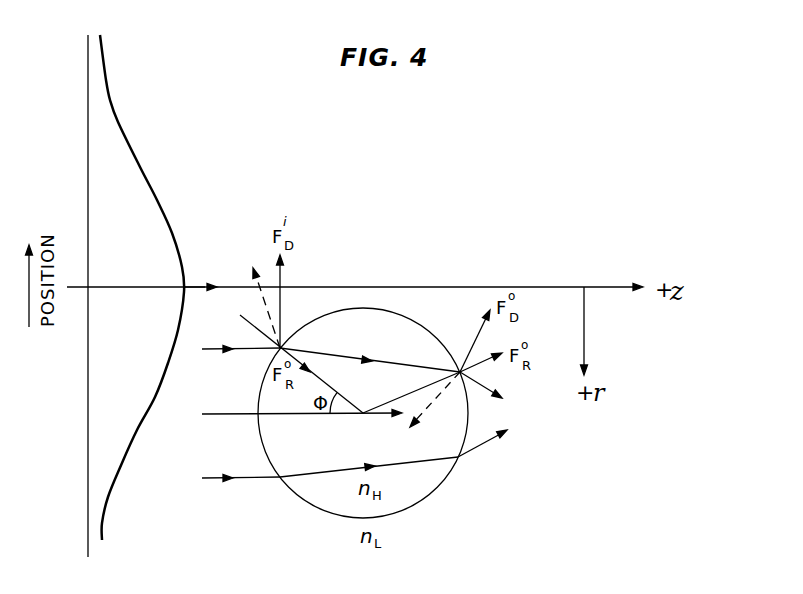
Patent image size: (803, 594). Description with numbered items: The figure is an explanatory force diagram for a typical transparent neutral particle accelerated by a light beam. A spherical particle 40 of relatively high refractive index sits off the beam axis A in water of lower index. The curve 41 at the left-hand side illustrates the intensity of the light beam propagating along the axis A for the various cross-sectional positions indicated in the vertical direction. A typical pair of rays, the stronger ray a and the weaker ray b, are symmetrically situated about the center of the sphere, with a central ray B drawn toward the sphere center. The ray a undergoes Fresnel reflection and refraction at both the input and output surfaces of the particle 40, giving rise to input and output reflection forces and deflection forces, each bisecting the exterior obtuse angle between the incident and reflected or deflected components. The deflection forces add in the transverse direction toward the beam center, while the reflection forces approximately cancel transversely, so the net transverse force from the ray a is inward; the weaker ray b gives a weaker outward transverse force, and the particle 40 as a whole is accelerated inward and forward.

The spherical particle 40 is at (447, 478).
The curve 41 is at (119, 123).
The beam axis A is at (170, 276).
The stronger ray a is at (323, 355).
The central light ray B is at (294, 415).
The weaker ray b is at (347, 460).